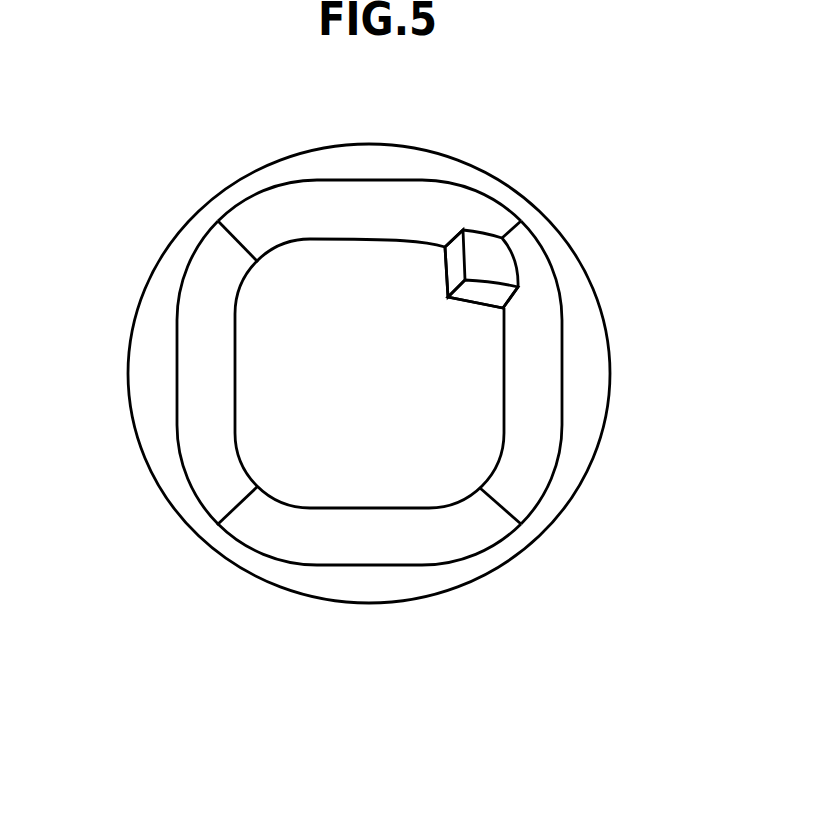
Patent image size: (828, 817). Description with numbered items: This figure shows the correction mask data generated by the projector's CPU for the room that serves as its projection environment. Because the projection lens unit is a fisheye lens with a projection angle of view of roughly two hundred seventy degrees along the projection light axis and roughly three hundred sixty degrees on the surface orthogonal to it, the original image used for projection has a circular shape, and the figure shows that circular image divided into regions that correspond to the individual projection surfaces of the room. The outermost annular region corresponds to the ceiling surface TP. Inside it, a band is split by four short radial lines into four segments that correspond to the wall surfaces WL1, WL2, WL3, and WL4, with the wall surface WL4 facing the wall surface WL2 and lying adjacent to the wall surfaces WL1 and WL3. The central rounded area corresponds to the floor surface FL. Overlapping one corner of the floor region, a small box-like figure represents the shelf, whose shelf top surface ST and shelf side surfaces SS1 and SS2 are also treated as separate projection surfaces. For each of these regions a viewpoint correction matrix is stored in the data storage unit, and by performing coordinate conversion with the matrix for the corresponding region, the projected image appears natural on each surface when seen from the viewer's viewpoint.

The ceiling surface TP is at (580, 303).
The wall surface WL1 is at (190, 320).
The wall surface WL2 is at (442, 207).
The wall surface WL3 is at (548, 345).
The wall surface WL4 is at (440, 548).
The floor surface FL is at (340, 277).
The shelf top surface ST is at (489, 281).
The shelf side surface SS1 is at (453, 262).
The shelf side surface SS2 is at (475, 290).